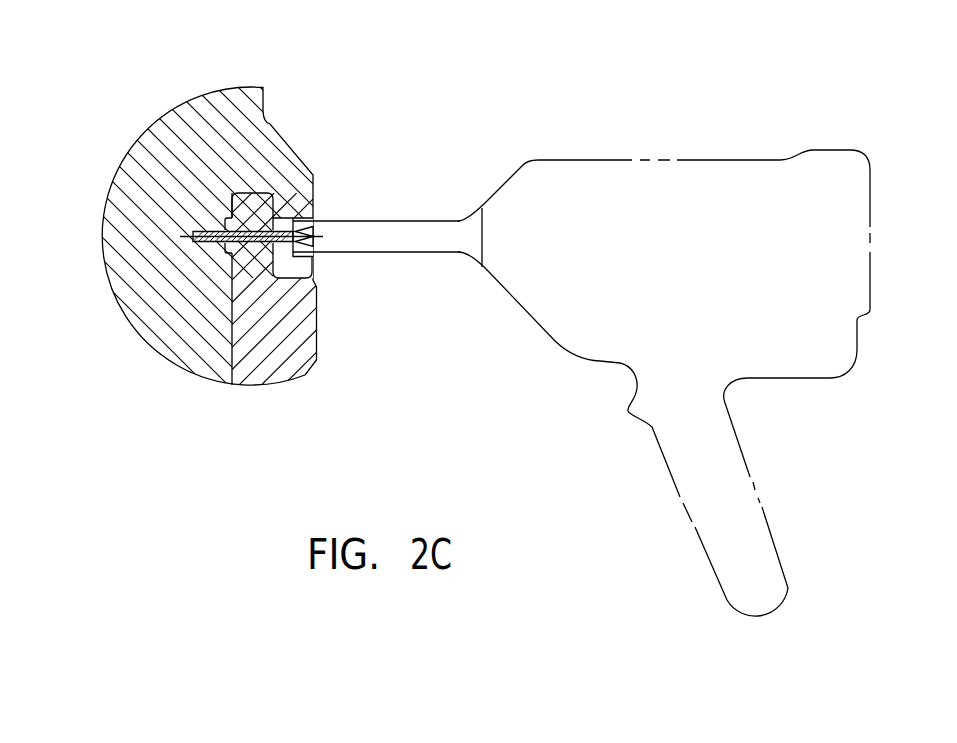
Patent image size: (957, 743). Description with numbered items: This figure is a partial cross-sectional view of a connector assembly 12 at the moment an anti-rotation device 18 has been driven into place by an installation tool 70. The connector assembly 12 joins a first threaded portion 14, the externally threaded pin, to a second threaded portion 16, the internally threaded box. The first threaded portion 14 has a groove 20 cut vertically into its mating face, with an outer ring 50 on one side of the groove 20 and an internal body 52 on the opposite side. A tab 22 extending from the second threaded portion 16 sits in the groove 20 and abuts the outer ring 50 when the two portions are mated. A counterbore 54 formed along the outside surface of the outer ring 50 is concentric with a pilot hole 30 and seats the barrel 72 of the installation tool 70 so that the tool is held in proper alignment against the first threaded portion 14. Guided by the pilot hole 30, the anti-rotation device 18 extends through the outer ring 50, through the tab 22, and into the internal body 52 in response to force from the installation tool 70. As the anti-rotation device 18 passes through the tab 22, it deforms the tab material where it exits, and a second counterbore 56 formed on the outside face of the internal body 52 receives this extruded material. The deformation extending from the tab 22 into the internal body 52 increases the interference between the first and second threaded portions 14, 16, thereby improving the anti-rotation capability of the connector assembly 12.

The connector assembly 12 is at (358, 178).
The first threaded portion 14 is at (253, 119).
The second threaded portion 16 is at (280, 352).
The anti-rotation device 18 is at (194, 232).
The groove 20 is at (248, 193).
The tab 22 is at (243, 212).
The pilot hole 30 is at (297, 218).
The outer ring 50 is at (293, 268).
The internal body 52 is at (168, 315).
The counterbore 54 is at (308, 257).
The counterbore 56 is at (224, 218).
The installation tool 70 is at (712, 273).
The barrel 72 is at (377, 219).